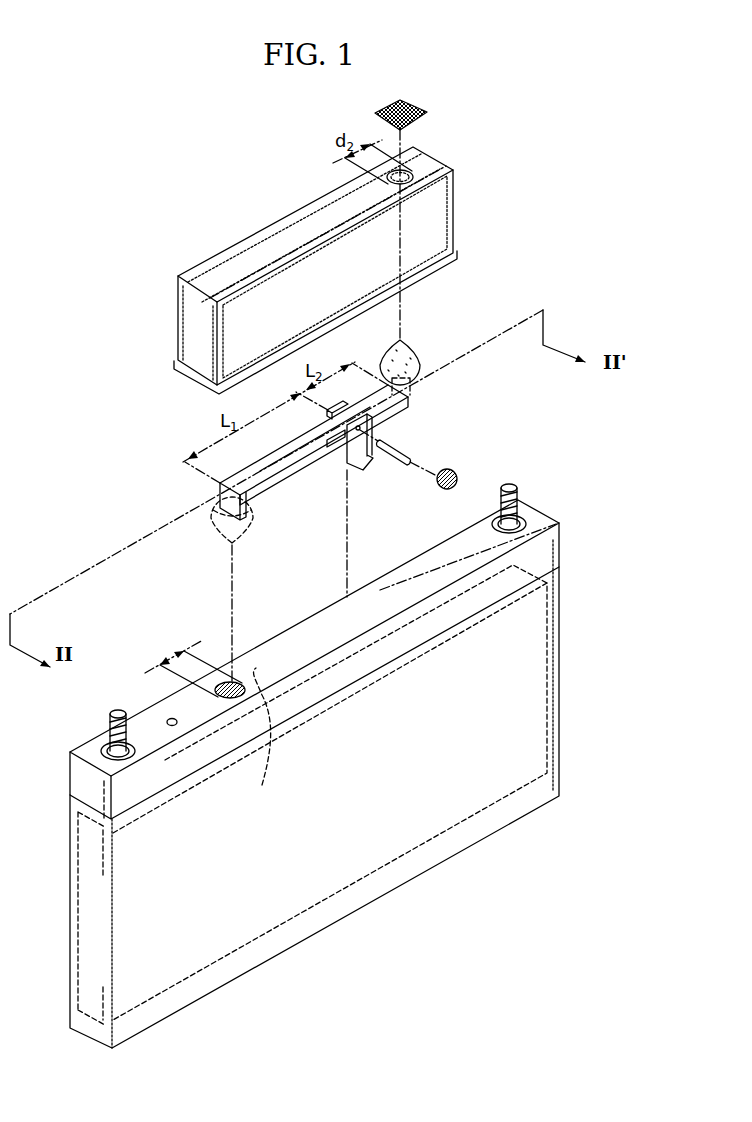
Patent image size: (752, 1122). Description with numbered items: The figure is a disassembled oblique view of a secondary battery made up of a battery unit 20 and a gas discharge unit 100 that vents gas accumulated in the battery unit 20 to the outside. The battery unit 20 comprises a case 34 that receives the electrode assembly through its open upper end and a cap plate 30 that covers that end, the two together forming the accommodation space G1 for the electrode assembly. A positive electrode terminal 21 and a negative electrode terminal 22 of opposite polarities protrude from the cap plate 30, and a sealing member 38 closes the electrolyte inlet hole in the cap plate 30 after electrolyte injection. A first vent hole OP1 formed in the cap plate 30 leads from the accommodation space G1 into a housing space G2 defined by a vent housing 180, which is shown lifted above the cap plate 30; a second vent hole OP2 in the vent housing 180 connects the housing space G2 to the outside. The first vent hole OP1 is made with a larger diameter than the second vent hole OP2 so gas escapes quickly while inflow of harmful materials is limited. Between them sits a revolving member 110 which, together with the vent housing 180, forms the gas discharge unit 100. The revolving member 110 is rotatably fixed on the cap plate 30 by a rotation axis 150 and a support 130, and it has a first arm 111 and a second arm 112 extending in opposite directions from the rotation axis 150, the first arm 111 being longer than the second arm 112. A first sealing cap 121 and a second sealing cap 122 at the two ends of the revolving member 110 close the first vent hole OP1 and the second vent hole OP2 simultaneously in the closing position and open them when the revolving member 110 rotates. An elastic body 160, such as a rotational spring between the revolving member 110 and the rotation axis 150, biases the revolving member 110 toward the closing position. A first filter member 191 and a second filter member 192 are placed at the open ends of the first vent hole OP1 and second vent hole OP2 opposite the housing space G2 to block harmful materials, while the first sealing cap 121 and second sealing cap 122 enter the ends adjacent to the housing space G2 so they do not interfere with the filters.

The battery unit 20 is at (348, 747).
The positive electrode terminal 21 is at (110, 730).
The negative electrode terminal 22 is at (512, 490).
The cap plate 30 is at (548, 550).
The case 34 is at (560, 596).
The sealing member 38 is at (168, 719).
The gas discharge unit 100 is at (370, 453).
The revolving member 110 is at (314, 463).
The first arm 111 is at (298, 455).
The second arm 112 is at (395, 405).
The first sealing cap 121 is at (234, 545).
The second sealing cap 122 is at (406, 356).
The support 130 is at (357, 472).
The rotation axis 150 is at (398, 466).
The elastic body 160 is at (455, 470).
The vent housing 180 is at (455, 216).
The first filter member 191 is at (267, 736).
The second filter member 192 is at (430, 104).
The first vent hole OP1 is at (232, 684).
The second vent hole OP2 is at (452, 173).
The accommodation space G1 is at (548, 692).
The housing space G2 is at (448, 232).